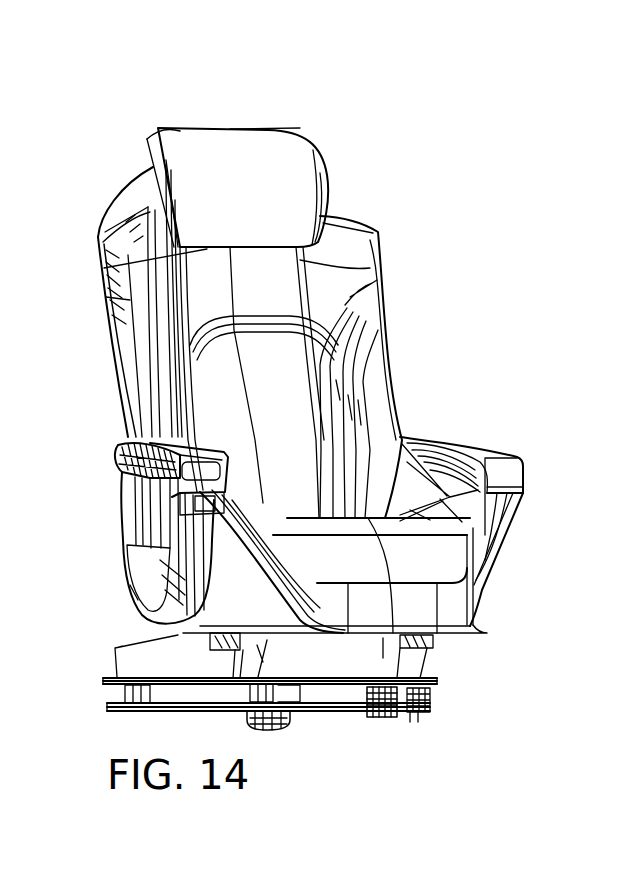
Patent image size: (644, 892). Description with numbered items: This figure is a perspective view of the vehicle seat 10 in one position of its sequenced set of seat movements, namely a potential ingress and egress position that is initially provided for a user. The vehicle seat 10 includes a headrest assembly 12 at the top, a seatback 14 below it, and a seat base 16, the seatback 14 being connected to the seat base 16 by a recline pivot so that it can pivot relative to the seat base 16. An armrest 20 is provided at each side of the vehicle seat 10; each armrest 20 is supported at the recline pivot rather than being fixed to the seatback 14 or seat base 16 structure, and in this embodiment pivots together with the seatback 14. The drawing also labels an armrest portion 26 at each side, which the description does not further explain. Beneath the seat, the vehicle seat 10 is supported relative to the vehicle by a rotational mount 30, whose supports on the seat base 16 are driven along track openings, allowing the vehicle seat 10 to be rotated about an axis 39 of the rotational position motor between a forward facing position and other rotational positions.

The vehicle seat 10 is at (440, 287).
The headrest assembly 12 is at (187, 175).
The seatback 14 is at (193, 308).
The seat base (cushion) 16 is at (483, 560).
The armrest 20 is at (177, 525).
The armrest 26 is at (120, 404).
The rotational mount 30 is at (432, 702).
The axis 39 is at (273, 688).